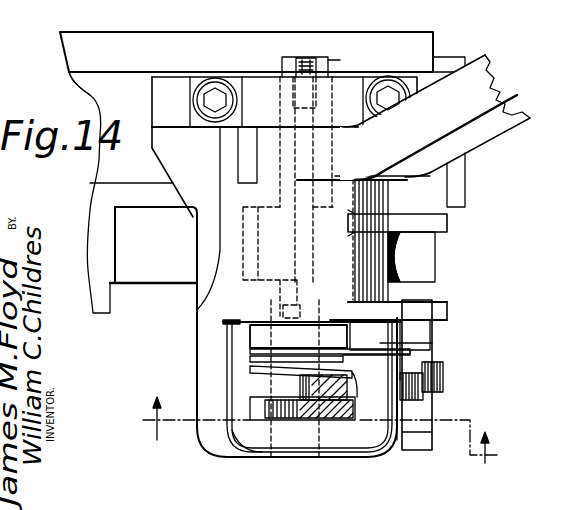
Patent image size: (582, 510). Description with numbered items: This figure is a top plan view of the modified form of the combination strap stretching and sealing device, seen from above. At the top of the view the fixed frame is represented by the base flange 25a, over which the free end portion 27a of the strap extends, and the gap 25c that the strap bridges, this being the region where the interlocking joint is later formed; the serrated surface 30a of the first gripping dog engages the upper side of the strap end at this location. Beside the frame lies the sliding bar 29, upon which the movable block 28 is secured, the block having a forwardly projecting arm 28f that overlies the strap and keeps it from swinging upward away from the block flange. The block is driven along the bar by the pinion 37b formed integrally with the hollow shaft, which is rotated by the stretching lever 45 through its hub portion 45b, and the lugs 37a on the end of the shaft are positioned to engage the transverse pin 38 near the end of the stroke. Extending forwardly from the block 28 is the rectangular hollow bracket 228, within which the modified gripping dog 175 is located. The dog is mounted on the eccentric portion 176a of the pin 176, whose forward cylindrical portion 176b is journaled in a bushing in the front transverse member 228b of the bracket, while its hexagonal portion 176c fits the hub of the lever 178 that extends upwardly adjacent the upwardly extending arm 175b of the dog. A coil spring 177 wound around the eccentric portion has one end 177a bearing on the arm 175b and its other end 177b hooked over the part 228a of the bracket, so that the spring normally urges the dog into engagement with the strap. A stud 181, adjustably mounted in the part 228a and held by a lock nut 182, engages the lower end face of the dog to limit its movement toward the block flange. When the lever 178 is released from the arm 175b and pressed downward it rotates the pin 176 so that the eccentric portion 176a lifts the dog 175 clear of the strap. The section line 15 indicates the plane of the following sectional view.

The section line 15 is at (321, 431).
The base flange 25a is at (166, 0).
The gap 25c is at (440, 0).
The free end portion of strap 27a is at (518, 0).
The block 28 is at (197, 310).
The forwardly projecting arm 28f is at (423, 426).
The sliding bar 29 is at (90, 78).
The serrated surface 30a is at (262, 36).
The lugs 37a is at (288, 57).
The pinion 37b is at (250, 237).
The transverse pin 38 is at (343, 63).
The stretching lever 45 is at (504, 90).
The hub portion 45b is at (270, 153).
The gripping dog 175 is at (265, 306).
The upwardly extending arm 175b is at (243, 460).
The pin 176 is at (313, 55).
The eccentric portion 176a is at (300, 382).
The cylindrical portion 176b is at (257, 460).
The hexagonal portion 176c is at (300, 393).
The coil spring 177 is at (252, 353).
The spring end 177a is at (412, 350).
The spring end 177b is at (373, 353).
The lever 178 is at (260, 427).
The stud 181 is at (443, 372).
The lock nut 182 is at (425, 398).
The rectangular hollow bracket 228 is at (335, 460).
The bracket part 228a is at (425, 420).
The front transverse member 228b is at (398, 450).